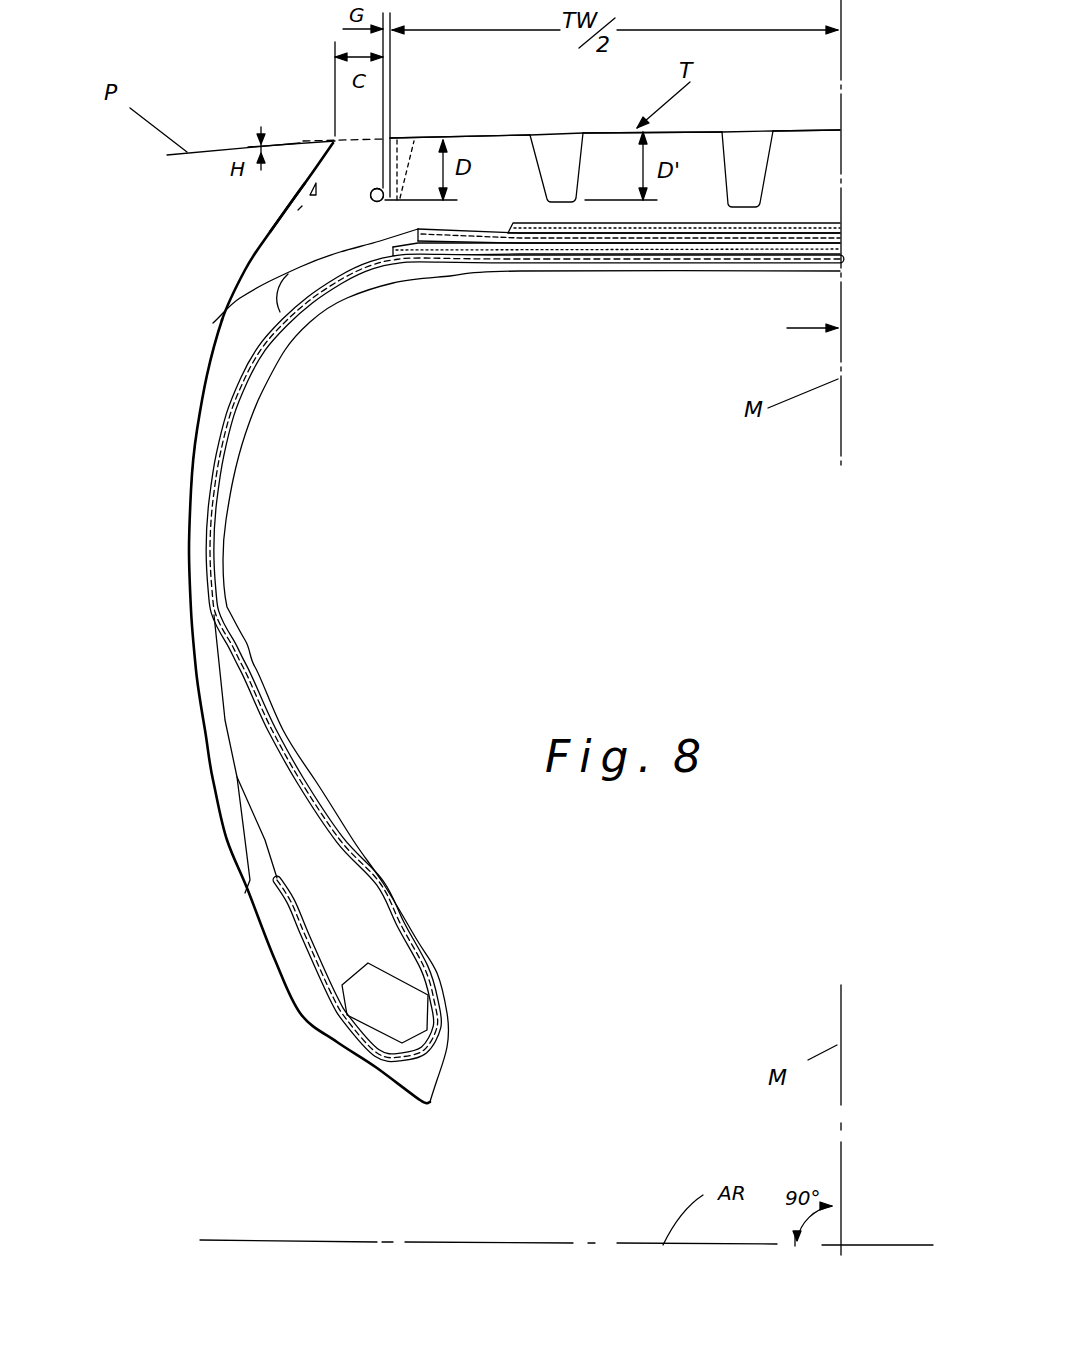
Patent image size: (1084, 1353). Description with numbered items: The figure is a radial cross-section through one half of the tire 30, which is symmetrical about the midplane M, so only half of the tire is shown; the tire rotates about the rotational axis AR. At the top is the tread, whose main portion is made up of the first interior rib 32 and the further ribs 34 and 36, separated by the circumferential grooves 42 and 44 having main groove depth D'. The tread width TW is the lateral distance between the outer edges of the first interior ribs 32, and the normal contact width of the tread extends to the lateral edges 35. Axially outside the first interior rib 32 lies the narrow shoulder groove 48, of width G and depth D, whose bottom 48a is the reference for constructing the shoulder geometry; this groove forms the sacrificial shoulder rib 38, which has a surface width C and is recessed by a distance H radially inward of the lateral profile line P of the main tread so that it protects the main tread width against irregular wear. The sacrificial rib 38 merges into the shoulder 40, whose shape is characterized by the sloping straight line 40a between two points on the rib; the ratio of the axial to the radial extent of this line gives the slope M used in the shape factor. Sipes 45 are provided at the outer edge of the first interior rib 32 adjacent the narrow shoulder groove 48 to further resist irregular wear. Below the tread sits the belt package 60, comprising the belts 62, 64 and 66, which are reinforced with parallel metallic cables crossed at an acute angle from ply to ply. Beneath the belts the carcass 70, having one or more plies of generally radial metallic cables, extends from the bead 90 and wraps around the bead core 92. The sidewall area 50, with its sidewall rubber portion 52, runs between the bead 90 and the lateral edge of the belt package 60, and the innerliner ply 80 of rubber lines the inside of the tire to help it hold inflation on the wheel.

The tire 30 is at (183, 223).
The first interior rib 32 is at (482, 130).
The rib 34 is at (667, 127).
The lateral edge 35 is at (332, 142).
The rib 36 is at (822, 130).
The sacrificial shoulder rib 38 is at (370, 140).
The shoulder 40 is at (318, 166).
The sloping straight line 40a is at (288, 198).
The circumferential groove 42 is at (550, 157).
The circumferential groove 44 is at (744, 157).
The sipes 45 is at (415, 138).
The narrow shoulder groove 48 is at (392, 135).
The bottom of narrow shoulder groove 48a is at (372, 197).
The sidewall area 50 is at (175, 412).
The sidewall rubber portion 52 is at (186, 533).
The belt package 60 is at (632, 245).
The belt 62 is at (803, 222).
The belt 64 is at (835, 246).
The belt 66 is at (828, 258).
The carcass 70 is at (312, 333).
The innerliner ply 80 is at (238, 462).
The bead 90 is at (407, 890).
The bead core 92 is at (397, 983).